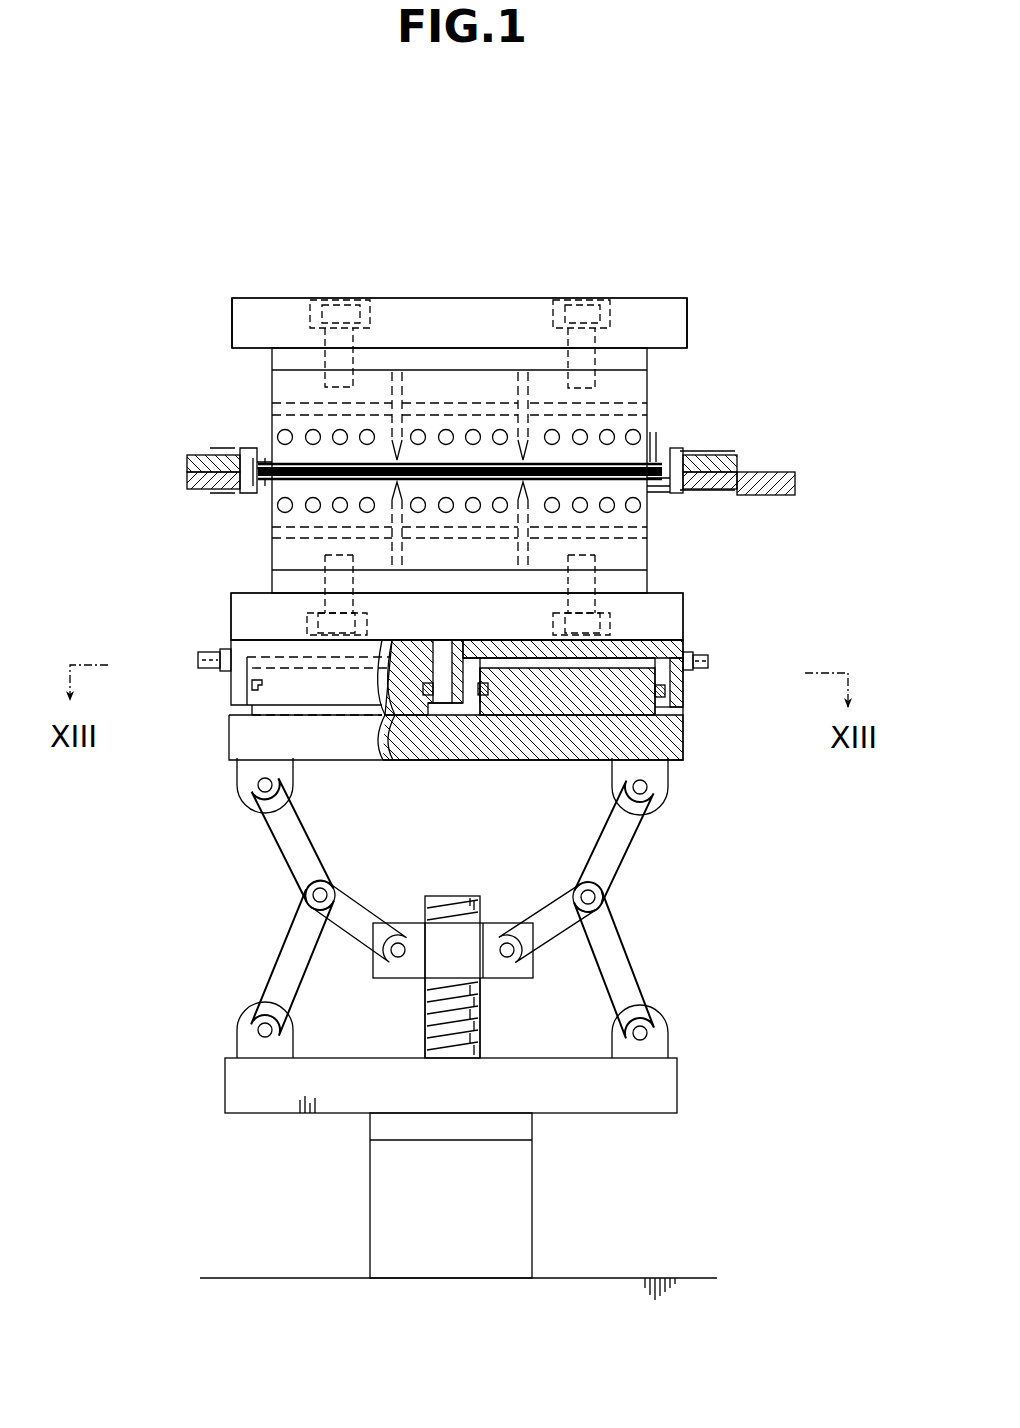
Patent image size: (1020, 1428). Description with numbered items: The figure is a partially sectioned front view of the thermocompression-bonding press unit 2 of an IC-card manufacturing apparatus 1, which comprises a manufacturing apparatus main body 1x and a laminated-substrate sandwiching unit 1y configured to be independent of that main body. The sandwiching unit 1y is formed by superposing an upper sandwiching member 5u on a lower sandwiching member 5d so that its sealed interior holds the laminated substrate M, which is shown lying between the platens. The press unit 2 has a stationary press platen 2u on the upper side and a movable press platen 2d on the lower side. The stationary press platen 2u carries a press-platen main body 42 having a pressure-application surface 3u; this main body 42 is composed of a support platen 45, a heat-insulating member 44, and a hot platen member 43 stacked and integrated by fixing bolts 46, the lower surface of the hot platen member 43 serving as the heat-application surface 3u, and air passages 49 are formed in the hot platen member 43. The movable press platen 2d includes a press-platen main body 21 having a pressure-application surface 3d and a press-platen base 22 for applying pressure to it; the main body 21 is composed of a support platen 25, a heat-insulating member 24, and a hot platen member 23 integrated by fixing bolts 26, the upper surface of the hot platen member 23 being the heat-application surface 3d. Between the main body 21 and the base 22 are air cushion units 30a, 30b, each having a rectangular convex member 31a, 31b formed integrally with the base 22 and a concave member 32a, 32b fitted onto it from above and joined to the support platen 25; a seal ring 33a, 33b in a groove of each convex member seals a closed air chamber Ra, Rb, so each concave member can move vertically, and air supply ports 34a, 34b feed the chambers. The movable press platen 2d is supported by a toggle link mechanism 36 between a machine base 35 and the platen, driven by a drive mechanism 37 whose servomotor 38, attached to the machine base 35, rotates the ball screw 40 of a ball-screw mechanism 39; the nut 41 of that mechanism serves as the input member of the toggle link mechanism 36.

The IC-card manufacturing apparatus 1 is at (720, 212).
The manufacturing apparatus main body 1x is at (705, 293).
The laminated-substrate sandwiching unit 1y is at (720, 432).
The thermocompression-bonding press unit 2 is at (235, 267).
The stationary press platen 2u is at (705, 368).
The movable press platen 2d is at (742, 560).
The pressure-application surface 3u is at (263, 453).
The pressure-application surface 3d is at (655, 490).
The upper sandwiching member 5u is at (177, 455).
The lower sandwiching member 5d is at (177, 480).
The press-platen main body 21 is at (180, 543).
The press-platen base 22 is at (397, 765).
The hot platen member 23 is at (272, 515).
The heat-insulating member 24 is at (270, 570).
The support platen 25 is at (230, 617).
The fixing bolts 26 is at (640, 632).
The air cushion unit 30a is at (222, 698).
The air cushion unit 30b is at (687, 700).
The convex member 31a is at (405, 690).
The convex member 31b is at (497, 715).
The concave member 32a is at (230, 685).
The concave member 32b is at (687, 688).
The seal ring 33a is at (430, 690).
The seal ring 33b is at (598, 660).
The air supply port 34a is at (222, 650).
The air supply port 34b is at (700, 647).
The machine base 35 is at (678, 1277).
The toggle link mechanism 36 is at (637, 940).
The drive mechanism 37 is at (340, 1213).
The servomotor 38 is at (532, 1198).
The ball-screw mechanism 39 is at (487, 1000).
The ball screw 40 is at (425, 1028).
The nut 41 is at (412, 975).
The press-platen main body 42 is at (222, 362).
The hot platen member 43 is at (650, 400).
The heat-insulating member 44 is at (650, 352).
The support platen 45 is at (630, 300).
The fixing bolts 46 is at (580, 303).
The air passages 49 is at (415, 385).
The laminated substrate M is at (462, 463).
The air chamber Ra is at (325, 762).
The air chamber Rb is at (547, 720).